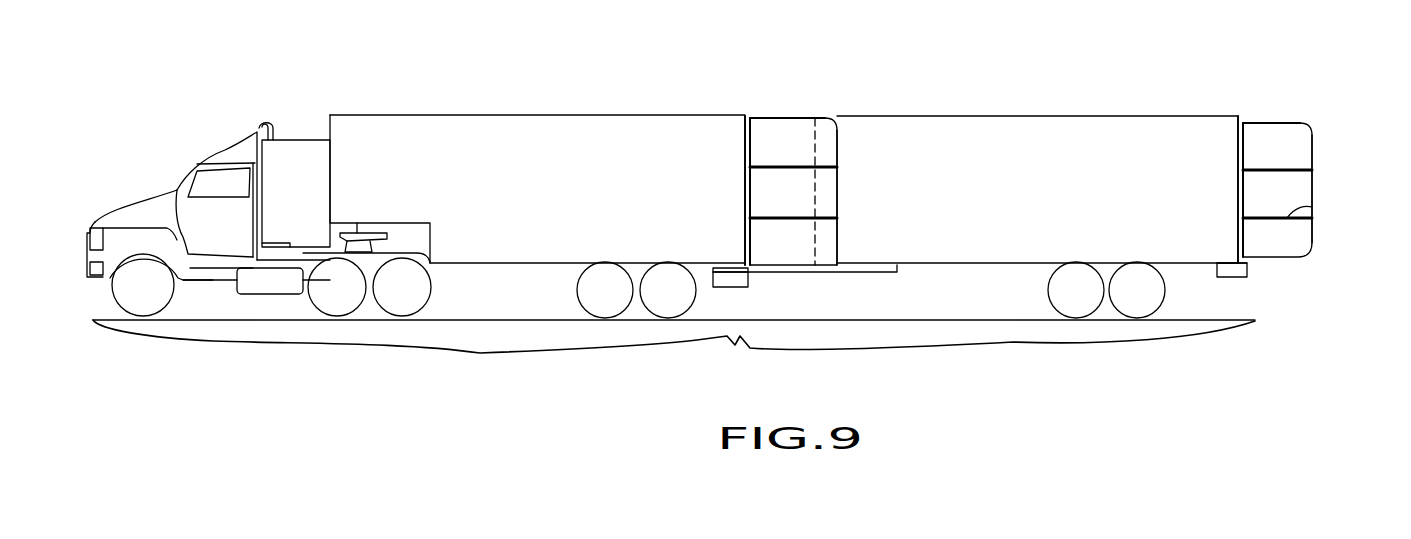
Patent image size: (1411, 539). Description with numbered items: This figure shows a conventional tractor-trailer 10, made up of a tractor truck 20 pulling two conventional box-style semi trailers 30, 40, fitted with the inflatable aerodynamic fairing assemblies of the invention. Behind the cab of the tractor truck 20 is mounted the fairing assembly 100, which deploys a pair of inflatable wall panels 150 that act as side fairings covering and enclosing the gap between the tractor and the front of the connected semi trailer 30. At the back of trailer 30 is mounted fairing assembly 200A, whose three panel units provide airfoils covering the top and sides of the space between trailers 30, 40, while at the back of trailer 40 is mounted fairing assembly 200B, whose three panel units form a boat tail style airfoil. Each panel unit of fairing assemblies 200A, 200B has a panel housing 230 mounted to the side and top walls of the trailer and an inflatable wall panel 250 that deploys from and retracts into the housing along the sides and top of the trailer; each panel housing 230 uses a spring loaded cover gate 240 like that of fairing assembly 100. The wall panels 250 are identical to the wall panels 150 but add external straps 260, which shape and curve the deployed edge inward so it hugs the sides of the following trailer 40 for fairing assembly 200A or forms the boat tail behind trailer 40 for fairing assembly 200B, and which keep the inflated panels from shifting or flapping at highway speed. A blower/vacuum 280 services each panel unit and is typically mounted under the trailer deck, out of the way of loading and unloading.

The tractor-trailer 10 is at (190, 112).
The inflatable aerodynamic fairing assembly 100 is at (298, 118).
The inflatable wall panel 150 is at (307, 168).
The tractor truck 20 is at (213, 280).
The semi trailer 30 is at (522, 247).
The semi trailer 40 is at (1022, 225).
The fairing assembly 200A is at (784, 112).
The fairing assembly 200B is at (1273, 110).
The panel housing 230 is at (745, 190).
The spring loaded cover gate 240 is at (763, 116).
The inflatable wall panel 250 is at (793, 148).
The external strap 260 is at (1287, 172).
The blower/vacuum 280 is at (727, 279).